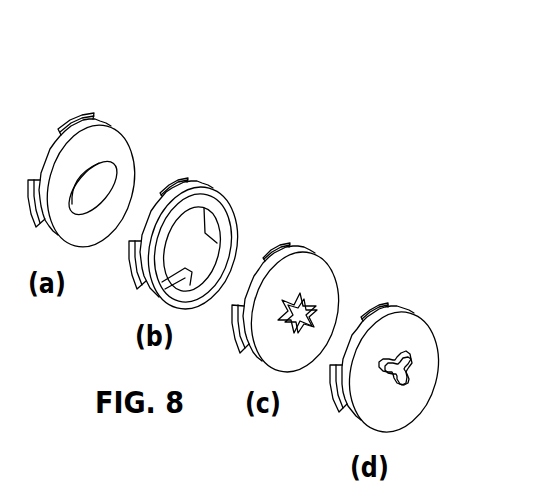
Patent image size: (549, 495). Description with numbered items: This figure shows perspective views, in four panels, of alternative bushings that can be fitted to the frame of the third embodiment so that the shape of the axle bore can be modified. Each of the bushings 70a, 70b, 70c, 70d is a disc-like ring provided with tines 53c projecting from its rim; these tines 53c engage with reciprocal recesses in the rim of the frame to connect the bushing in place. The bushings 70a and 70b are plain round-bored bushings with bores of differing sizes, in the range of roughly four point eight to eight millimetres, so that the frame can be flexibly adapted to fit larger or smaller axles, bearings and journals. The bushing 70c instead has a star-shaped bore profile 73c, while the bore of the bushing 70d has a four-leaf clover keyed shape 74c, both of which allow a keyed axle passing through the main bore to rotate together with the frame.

The tines 53c is at (66, 127).
The bushing 70a is at (116, 110).
The bushing 70b is at (226, 176).
The bushing 70c is at (309, 238).
The bushing 70d is at (437, 318).
The star-shaped bore profile 73c is at (302, 305).
The four-leaf clover keyed shape 74c is at (408, 366).